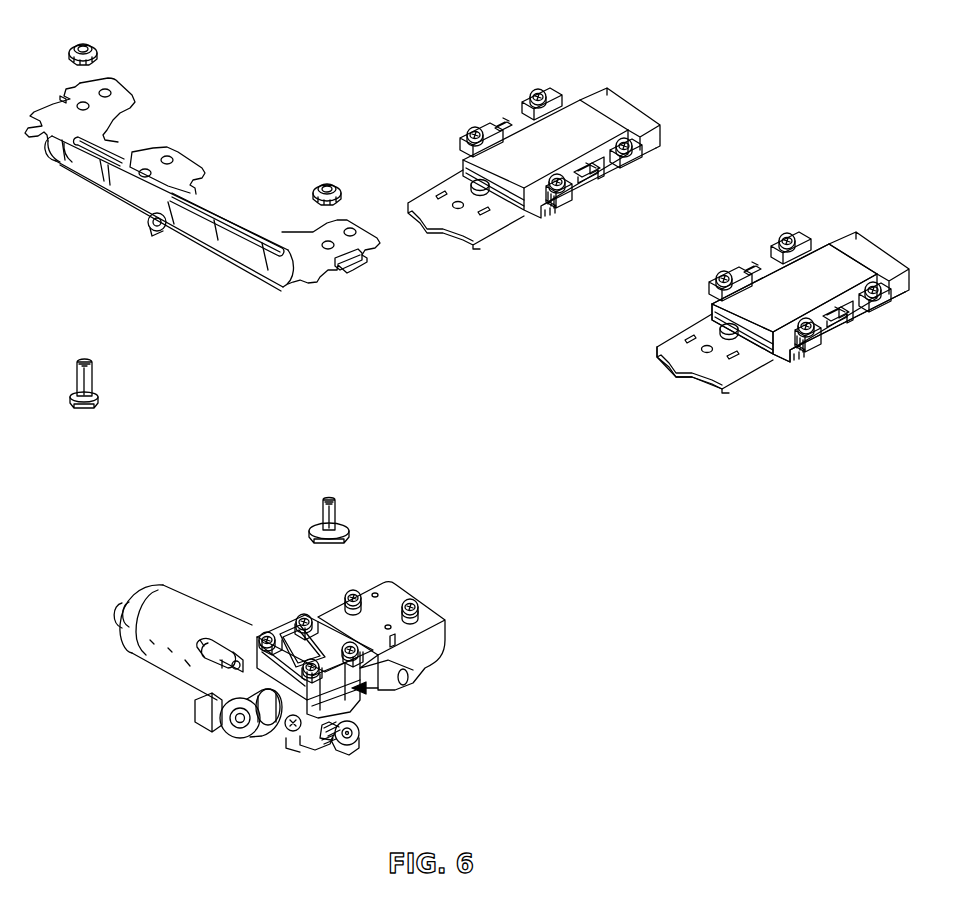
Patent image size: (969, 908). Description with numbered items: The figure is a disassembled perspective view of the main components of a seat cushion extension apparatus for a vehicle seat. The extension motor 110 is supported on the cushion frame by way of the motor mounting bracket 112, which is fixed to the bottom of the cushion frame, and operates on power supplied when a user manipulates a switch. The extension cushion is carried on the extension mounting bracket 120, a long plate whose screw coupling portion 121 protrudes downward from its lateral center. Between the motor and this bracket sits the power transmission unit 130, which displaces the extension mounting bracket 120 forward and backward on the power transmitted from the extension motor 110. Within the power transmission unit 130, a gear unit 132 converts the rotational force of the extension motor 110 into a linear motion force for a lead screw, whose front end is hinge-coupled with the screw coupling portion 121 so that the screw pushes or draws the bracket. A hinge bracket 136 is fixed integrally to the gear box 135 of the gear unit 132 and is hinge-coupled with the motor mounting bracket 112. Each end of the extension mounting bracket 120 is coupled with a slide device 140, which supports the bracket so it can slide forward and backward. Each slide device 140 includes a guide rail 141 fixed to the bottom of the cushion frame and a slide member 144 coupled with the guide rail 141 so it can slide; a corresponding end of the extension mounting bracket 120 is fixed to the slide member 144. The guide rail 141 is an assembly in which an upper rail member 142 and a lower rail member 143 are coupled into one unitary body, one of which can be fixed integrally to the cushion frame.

The extension motor 110 is at (155, 665).
The motor mounting bracket 112 is at (427, 643).
The extension mounting bracket 120 is at (70, 167).
The screw coupling portion 121 is at (153, 233).
The power transmission unit 130 is at (349, 688).
The gear unit 132 is at (357, 700).
The gear box 135 is at (328, 696).
The hinge bracket 136 is at (304, 616).
The slide device 140 is at (783, 306).
The guide rail 141 is at (813, 163).
The upper rail member 142 is at (770, 280).
The lower rail member 143 is at (890, 287).
The slide member 144 is at (783, 312).